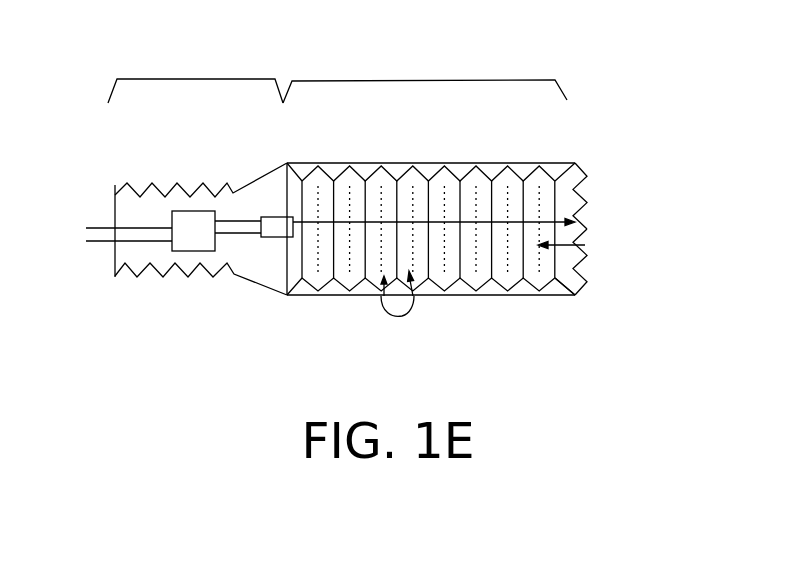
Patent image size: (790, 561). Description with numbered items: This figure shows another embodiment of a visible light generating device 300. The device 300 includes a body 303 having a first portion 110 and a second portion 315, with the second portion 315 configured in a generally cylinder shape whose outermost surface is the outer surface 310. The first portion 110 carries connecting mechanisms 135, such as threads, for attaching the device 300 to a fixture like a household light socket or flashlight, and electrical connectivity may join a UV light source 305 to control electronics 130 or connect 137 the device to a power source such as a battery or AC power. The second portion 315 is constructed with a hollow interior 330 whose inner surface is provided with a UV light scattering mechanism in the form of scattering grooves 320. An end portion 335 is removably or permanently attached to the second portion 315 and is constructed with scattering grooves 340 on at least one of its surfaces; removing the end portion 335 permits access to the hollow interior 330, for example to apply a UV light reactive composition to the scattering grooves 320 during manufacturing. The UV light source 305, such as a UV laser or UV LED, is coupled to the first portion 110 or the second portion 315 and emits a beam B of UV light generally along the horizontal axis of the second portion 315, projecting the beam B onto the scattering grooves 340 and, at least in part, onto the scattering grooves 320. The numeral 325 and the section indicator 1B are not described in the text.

The first portion 110 is at (198, 79).
The second portion 315 is at (423, 80).
The visible light generating device 300 is at (623, 126).
The outer surface 310 is at (333, 163).
The scattering grooves 320 is at (515, 170).
The connecting mechanisms 135 is at (120, 184).
The connect 137 is at (100, 243).
The control electronics 130 is at (183, 251).
The UV light source 305 is at (277, 238).
The body 303 is at (306, 326).
The lower apices 325 is at (512, 295).
The scattering grooves 340 is at (583, 190).
The hollow interior 330 is at (585, 263).
The end portion 335 is at (603, 291).
The beam B is at (583, 232).
The section 1B is at (405, 316).